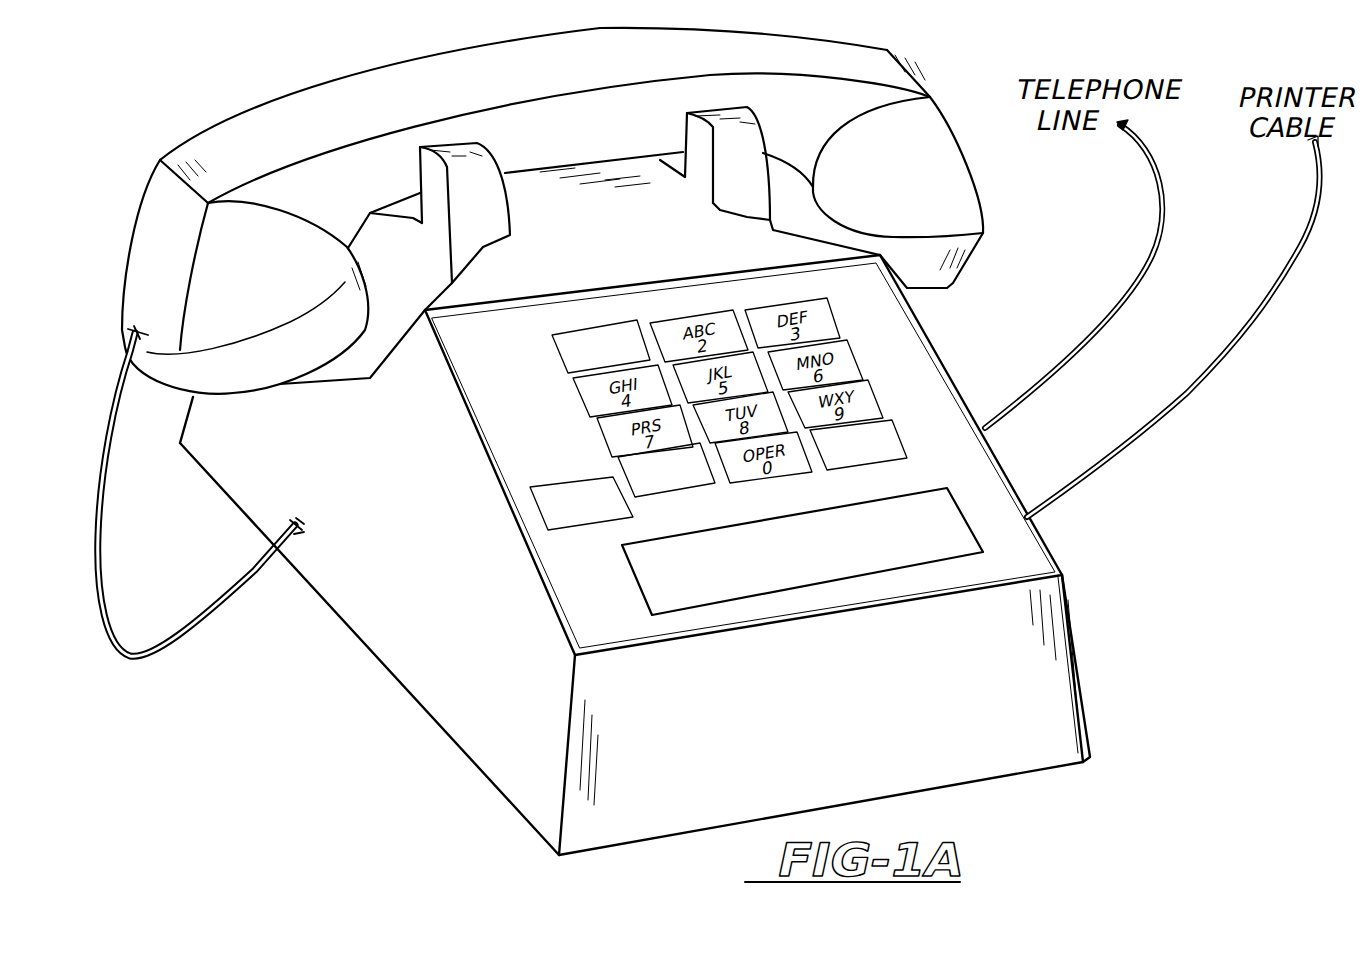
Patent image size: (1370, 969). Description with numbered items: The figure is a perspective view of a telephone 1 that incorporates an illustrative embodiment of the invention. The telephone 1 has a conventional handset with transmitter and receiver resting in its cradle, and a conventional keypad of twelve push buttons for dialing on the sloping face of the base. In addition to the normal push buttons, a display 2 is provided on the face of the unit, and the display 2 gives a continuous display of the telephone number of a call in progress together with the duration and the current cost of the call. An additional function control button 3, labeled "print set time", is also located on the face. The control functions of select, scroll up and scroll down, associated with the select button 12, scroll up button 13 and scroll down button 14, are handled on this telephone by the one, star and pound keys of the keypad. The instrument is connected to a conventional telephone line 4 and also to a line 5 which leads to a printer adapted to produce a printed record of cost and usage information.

The telephone 1 is at (1085, 657).
The display 2 is at (636, 577).
The function control button 3 is at (555, 480).
The telephone line 4 is at (1160, 247).
The line 5 is at (1188, 393).
The select button 12 is at (563, 358).
The scroll up button 13 is at (680, 497).
The scroll down button 14 is at (893, 433).